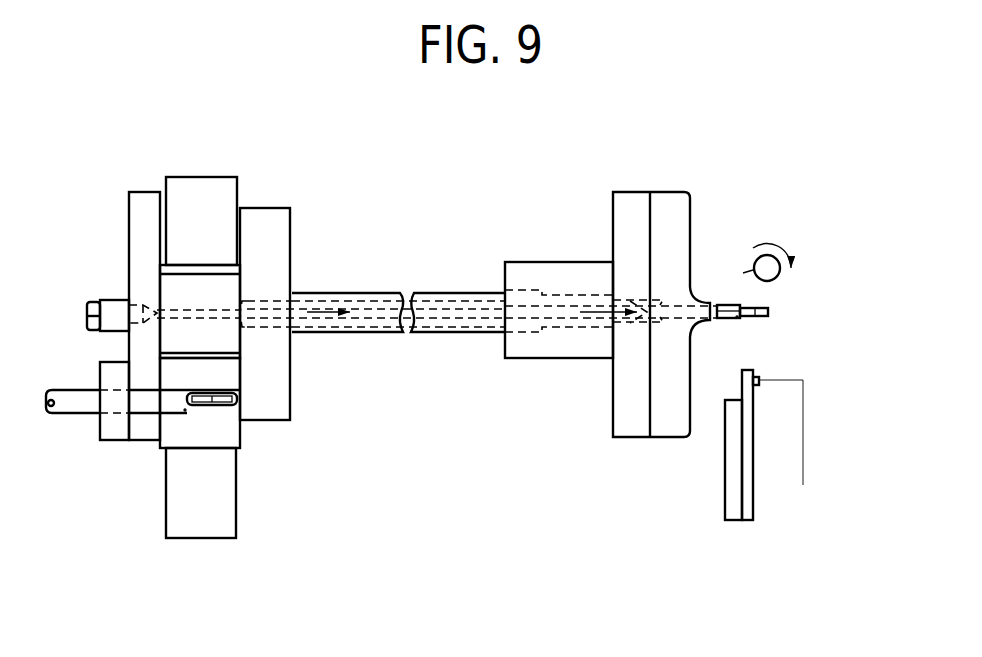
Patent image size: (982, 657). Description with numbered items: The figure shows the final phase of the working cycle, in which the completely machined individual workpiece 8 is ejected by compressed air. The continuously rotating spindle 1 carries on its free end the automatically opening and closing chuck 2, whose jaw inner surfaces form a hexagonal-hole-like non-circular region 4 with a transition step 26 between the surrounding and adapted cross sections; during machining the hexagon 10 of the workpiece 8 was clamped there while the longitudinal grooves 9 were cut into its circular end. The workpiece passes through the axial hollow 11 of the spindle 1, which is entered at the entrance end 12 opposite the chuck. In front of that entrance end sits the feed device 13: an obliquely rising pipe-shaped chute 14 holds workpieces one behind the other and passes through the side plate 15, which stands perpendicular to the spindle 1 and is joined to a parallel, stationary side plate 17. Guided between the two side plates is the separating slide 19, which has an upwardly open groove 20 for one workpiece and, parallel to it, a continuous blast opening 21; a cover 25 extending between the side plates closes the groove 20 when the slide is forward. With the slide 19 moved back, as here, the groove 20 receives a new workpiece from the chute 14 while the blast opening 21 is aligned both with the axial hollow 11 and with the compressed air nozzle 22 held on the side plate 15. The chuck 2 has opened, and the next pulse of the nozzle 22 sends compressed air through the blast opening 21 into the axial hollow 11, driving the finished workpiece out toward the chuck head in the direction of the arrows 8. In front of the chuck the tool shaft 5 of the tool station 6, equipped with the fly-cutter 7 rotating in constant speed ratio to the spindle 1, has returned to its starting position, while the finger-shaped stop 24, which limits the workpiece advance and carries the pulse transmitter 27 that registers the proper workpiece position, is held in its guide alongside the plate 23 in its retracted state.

The spindle 1 is at (375, 290).
The chuck 2 is at (702, 202).
The non-circular region 4 is at (677, 320).
The tool shaft 5 is at (780, 278).
The tool station 6 is at (797, 243).
The fly-cutter 7 is at (743, 273).
The individual workpiece 8 is at (185, 410).
The longitudinal grooves 9 is at (770, 315).
The hexagon 10 is at (730, 303).
The axial hollow 11 is at (460, 325).
The entrance end 12 is at (243, 312).
The feed device 13 is at (270, 22).
The chute 14 is at (83, 403).
The side plate 15 is at (140, 215).
The side plate 17 is at (275, 222).
The slide 19 is at (192, 437).
The groove 20 is at (227, 410).
The blast opening 21 is at (197, 312).
The compressed air nozzle 22 is at (120, 298).
The stop plate 23 is at (730, 492).
The stop 24 is at (747, 492).
The cover 25 is at (180, 290).
The transition step 26 is at (645, 320).
The pulse transmitter 27 is at (755, 385).